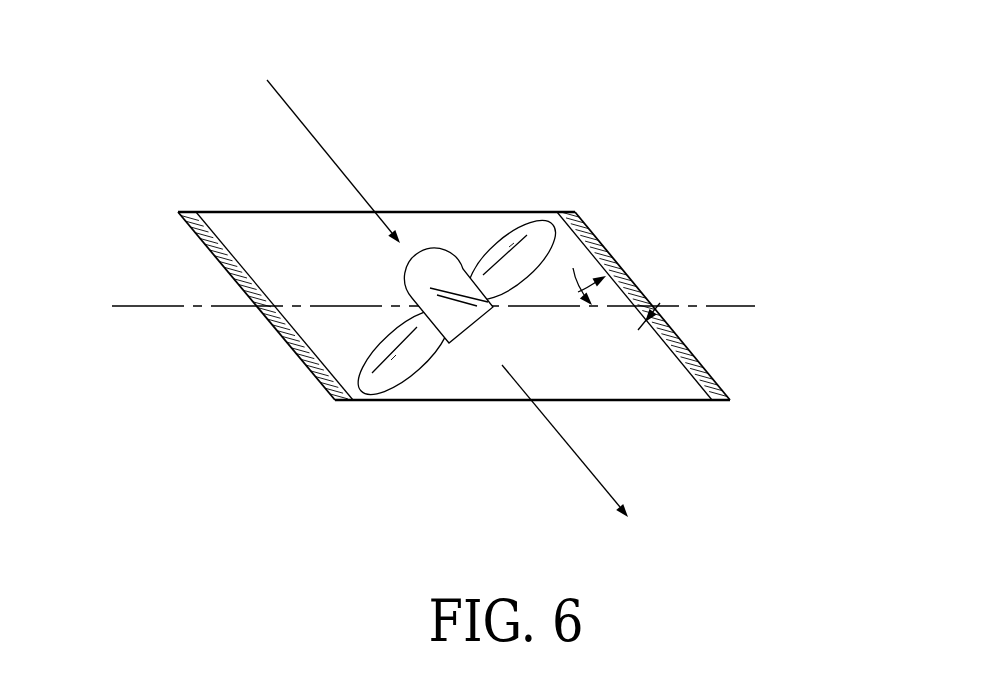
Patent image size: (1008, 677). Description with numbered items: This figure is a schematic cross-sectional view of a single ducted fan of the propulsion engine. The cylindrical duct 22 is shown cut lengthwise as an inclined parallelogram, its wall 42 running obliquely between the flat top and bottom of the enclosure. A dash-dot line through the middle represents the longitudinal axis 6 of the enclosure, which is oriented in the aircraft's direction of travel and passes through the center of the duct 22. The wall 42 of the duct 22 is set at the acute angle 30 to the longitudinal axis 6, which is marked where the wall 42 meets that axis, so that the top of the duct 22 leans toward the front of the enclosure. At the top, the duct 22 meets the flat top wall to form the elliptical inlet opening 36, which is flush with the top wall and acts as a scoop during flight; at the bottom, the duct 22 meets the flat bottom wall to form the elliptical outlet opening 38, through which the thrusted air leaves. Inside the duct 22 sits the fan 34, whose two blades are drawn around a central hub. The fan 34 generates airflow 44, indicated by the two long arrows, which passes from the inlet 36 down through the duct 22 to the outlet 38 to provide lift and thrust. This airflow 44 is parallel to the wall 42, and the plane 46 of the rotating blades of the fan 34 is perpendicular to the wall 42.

The longitudinal axis 6 is at (128, 303).
The cylindrical duct 22 is at (660, 303).
The angle 30 is at (573, 268).
The fan 34 is at (350, 345).
The elliptical inlet opening 36 is at (222, 212).
The elliptical outlet opening 38 is at (430, 401).
The wall 42 is at (704, 367).
The airflow 44 is at (303, 120).
The plane of the rotating blades 46 is at (488, 250).